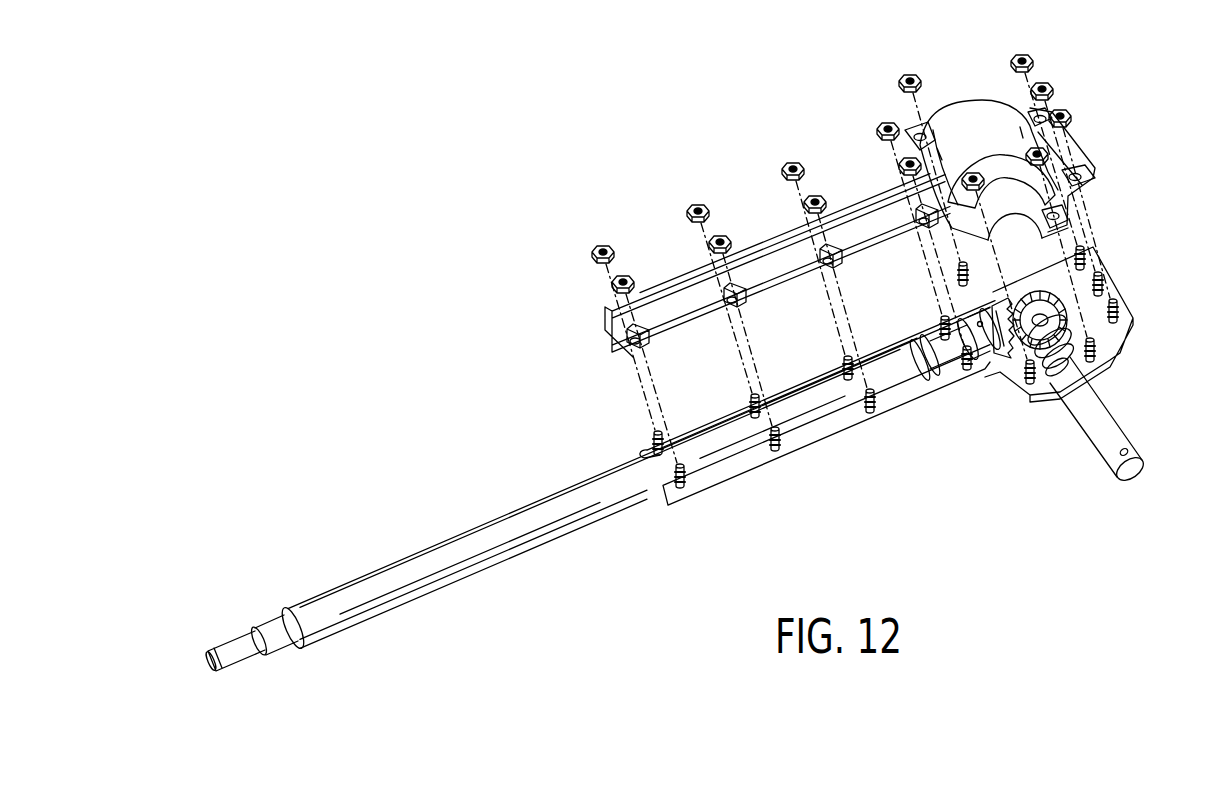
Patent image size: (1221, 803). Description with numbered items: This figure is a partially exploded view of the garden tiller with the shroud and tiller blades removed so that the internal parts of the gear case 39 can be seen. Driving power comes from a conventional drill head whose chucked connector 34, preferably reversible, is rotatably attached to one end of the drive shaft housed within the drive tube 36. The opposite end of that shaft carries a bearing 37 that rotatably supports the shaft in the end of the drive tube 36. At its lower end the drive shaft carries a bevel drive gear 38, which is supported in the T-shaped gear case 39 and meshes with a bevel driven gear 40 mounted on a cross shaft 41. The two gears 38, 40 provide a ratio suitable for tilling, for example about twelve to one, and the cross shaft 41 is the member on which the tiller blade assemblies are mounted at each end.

The chucked connector 34 is at (272, 632).
The drive tube 36 is at (405, 580).
The bearing 37 is at (1013, 293).
The bevel drive gear 38 is at (992, 358).
The gear case 39 is at (817, 427).
The bevel driven gear 40 is at (1057, 317).
The cross shaft 41 is at (1093, 427).